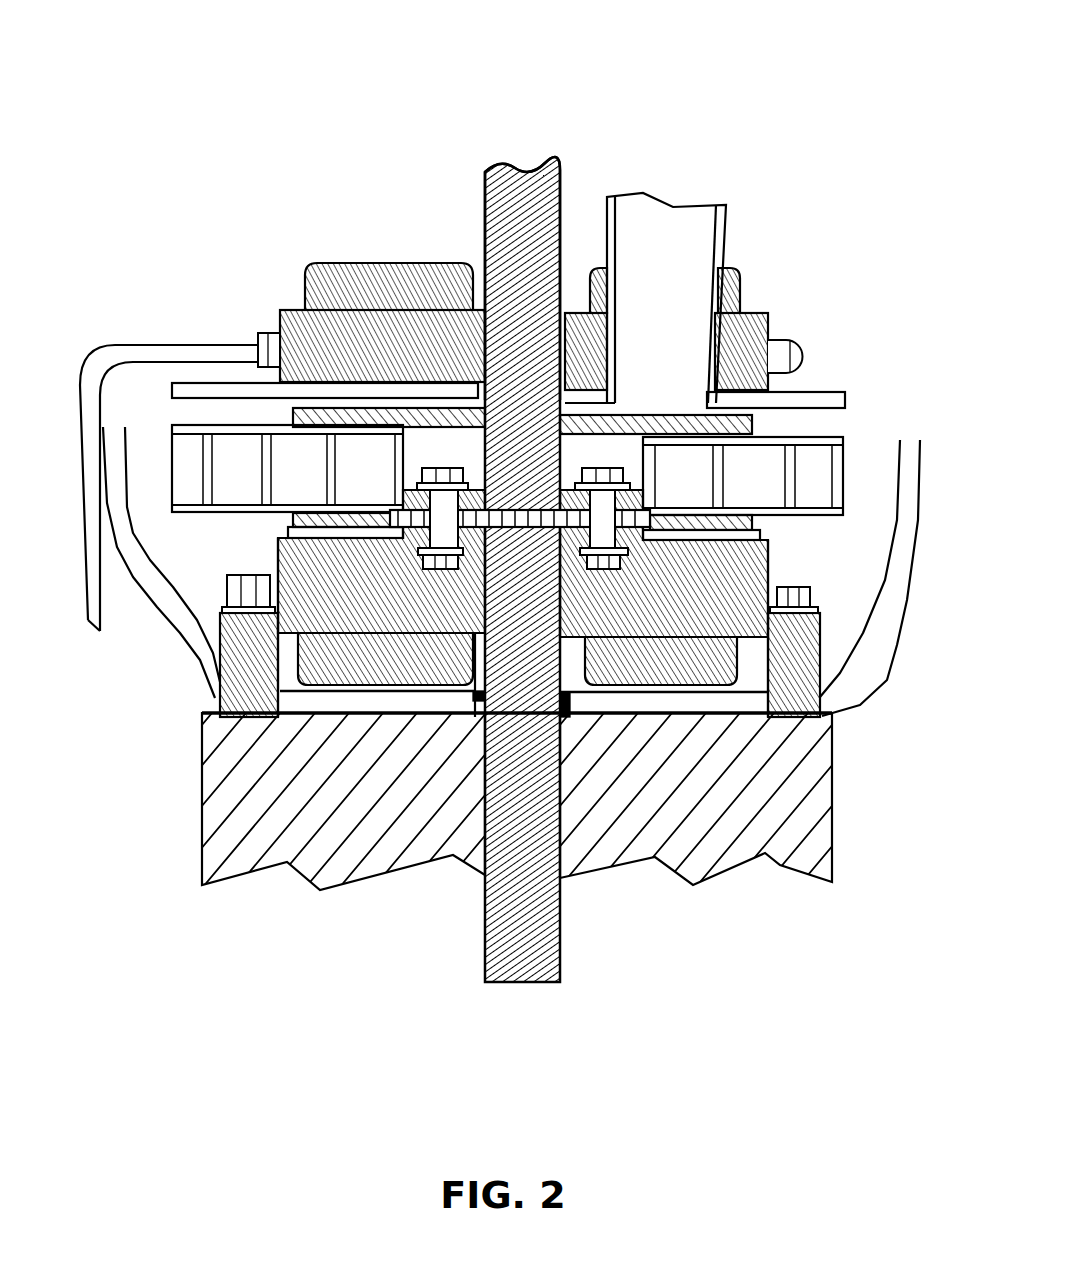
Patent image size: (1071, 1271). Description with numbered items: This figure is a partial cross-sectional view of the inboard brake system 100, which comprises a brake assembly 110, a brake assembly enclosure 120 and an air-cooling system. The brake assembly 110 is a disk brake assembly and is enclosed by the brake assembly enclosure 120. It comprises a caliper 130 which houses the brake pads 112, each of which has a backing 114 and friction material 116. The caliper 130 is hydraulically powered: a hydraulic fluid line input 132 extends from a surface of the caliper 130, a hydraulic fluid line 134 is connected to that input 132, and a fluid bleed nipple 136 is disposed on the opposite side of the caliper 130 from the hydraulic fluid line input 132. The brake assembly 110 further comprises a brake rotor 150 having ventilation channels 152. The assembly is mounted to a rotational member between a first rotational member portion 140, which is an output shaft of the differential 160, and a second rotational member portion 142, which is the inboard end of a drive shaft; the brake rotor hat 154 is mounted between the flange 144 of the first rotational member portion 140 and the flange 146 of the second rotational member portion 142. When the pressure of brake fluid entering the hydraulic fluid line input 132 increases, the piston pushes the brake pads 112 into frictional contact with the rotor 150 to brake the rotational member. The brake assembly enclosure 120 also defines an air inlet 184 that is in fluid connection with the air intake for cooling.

The inboard brake system 100 is at (440, 190).
The brake assembly 110 is at (857, 427).
The brake pads 112 is at (737, 515).
The backing 114 is at (293, 418).
The friction material 116 is at (303, 432).
The brake assembly enclosure 120 is at (190, 683).
The caliper 130 is at (407, 265).
The hydraulic fluid line input 132 is at (278, 333).
The hydraulic fluid line 134 is at (130, 343).
The fluid bleed nipple 136 is at (783, 337).
The first rotational member portion 140 is at (560, 895).
The second rotational member portion 142 is at (565, 200).
The flange 144 is at (823, 678).
The flange 146 is at (645, 500).
The brake rotor 150 is at (237, 515).
The ventilation channels 152 is at (190, 473).
The brake rotor hat 154 is at (523, 527).
The differential 160 is at (732, 873).
The air inlet 184 is at (668, 332).